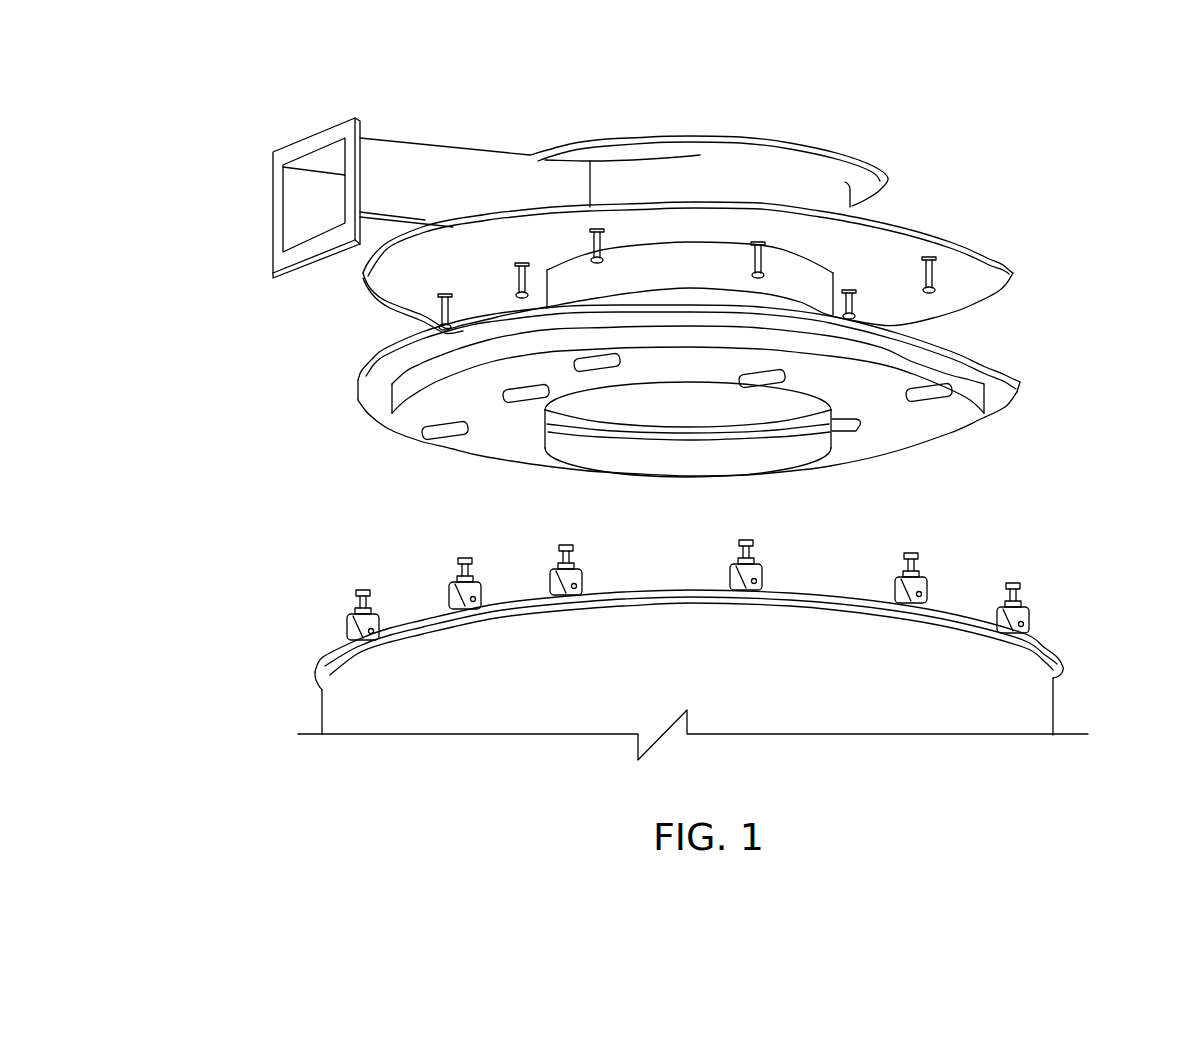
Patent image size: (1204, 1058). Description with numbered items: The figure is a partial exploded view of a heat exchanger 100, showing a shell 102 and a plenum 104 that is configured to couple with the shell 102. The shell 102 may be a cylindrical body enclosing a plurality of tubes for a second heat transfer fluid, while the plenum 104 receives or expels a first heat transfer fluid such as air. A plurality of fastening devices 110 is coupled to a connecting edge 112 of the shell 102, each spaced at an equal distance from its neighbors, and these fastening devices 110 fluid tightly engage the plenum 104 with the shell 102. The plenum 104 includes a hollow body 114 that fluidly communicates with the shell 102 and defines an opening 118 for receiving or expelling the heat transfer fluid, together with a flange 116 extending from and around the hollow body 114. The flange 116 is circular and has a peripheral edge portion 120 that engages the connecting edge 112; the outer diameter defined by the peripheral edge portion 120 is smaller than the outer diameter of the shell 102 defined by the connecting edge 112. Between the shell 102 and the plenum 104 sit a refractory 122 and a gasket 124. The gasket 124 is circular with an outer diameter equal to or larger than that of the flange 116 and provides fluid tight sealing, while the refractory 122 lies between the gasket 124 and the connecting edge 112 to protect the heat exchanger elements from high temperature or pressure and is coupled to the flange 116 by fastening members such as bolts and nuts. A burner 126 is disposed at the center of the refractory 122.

The heat exchanger 100 is at (1060, 92).
The shell 102 is at (1090, 688).
The plenum 104 is at (1000, 215).
The fastening devices 110 is at (565, 557).
The connecting edge 112 is at (957, 610).
The hollow body 114 is at (643, 178).
The flange 116 is at (915, 220).
The opening 118 is at (302, 152).
The peripheral edge portion 120 is at (988, 275).
The refractory 122 is at (960, 415).
The gasket 124 is at (372, 388).
The burner 126 is at (760, 458).